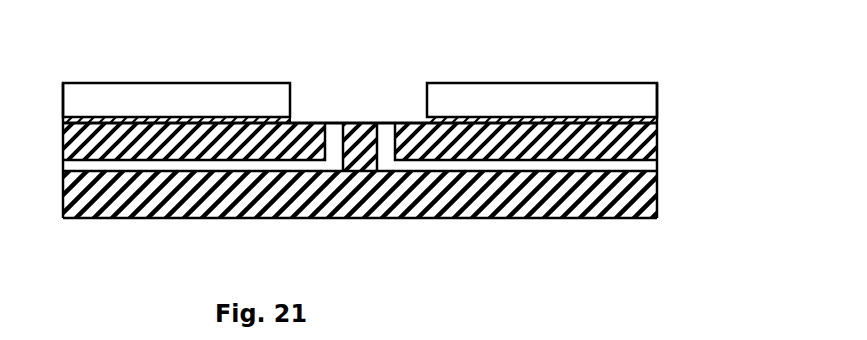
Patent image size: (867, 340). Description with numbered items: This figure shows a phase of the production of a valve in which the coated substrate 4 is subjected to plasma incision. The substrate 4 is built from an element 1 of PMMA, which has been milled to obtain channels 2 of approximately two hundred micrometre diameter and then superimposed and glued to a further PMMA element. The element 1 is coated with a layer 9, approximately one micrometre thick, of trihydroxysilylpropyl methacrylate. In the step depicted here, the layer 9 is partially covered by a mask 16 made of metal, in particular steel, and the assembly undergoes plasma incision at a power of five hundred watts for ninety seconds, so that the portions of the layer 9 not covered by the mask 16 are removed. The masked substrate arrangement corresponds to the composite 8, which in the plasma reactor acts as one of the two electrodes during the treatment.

The element 1 is at (657, 144).
The channels 2 is at (477, 218).
The substrate 4 is at (368, 138).
The composite 8 is at (542, 64).
The layer 9 is at (293, 120).
The mask 16 is at (477, 98).